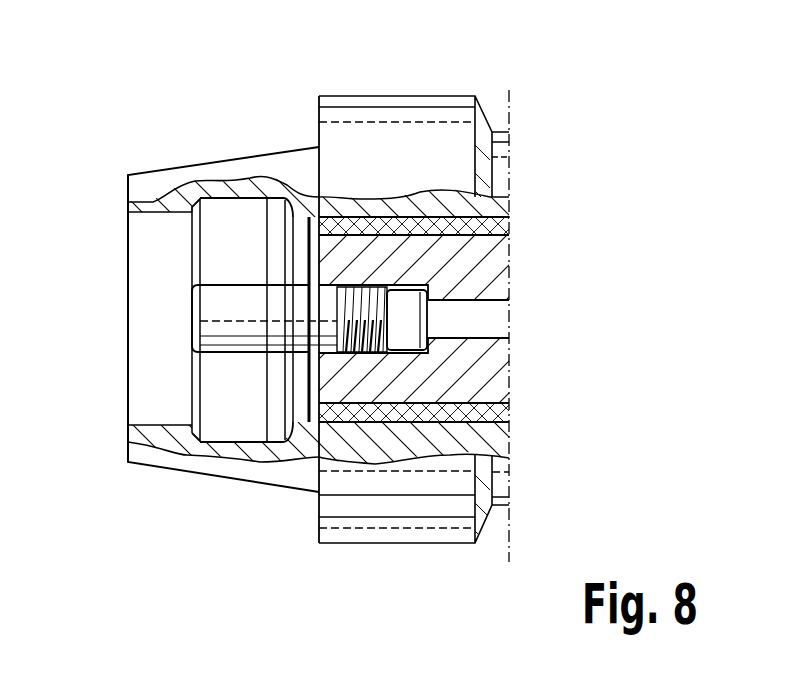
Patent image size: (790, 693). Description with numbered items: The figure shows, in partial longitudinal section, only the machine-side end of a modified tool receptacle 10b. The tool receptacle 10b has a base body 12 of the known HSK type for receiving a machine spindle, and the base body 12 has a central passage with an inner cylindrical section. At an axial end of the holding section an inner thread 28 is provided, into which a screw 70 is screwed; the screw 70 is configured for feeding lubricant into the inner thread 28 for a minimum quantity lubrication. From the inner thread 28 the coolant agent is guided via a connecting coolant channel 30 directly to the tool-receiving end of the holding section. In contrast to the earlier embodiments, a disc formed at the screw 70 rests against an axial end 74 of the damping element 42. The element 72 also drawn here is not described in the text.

The plug connector 10b is at (126, 112).
The housing 12 is at (227, 172).
The threaded portion 74 is at (337, 197).
The sealing element 42 is at (510, 226).
The contact pin 70 is at (210, 300).
The receiving bore 30 is at (487, 321).
The sleeve 72 is at (355, 353).
The contact element 28 is at (407, 352).